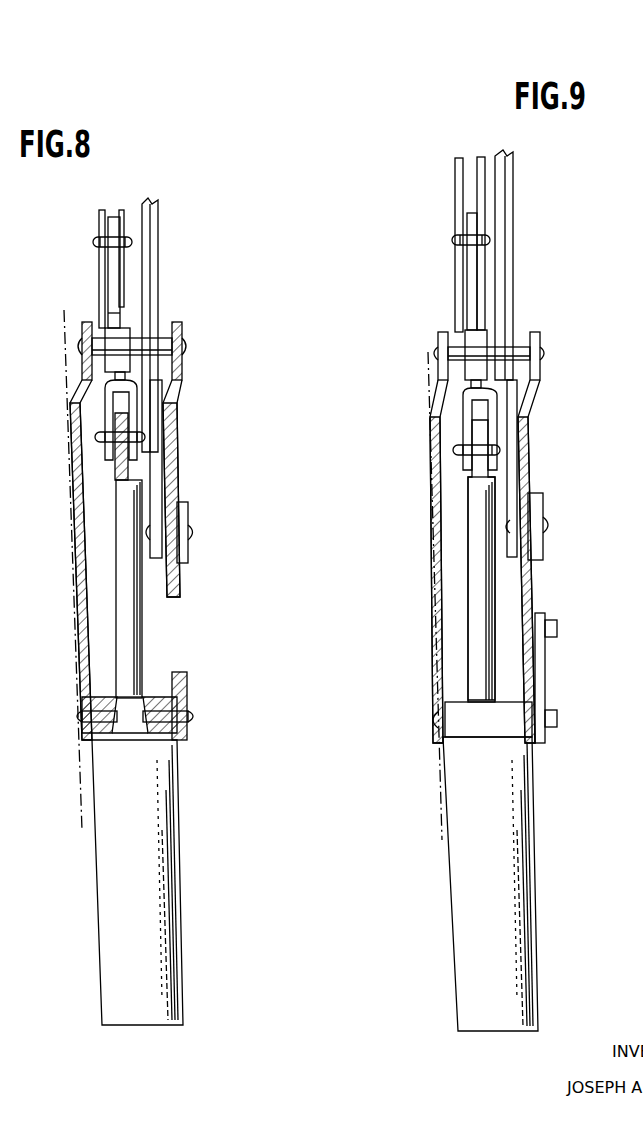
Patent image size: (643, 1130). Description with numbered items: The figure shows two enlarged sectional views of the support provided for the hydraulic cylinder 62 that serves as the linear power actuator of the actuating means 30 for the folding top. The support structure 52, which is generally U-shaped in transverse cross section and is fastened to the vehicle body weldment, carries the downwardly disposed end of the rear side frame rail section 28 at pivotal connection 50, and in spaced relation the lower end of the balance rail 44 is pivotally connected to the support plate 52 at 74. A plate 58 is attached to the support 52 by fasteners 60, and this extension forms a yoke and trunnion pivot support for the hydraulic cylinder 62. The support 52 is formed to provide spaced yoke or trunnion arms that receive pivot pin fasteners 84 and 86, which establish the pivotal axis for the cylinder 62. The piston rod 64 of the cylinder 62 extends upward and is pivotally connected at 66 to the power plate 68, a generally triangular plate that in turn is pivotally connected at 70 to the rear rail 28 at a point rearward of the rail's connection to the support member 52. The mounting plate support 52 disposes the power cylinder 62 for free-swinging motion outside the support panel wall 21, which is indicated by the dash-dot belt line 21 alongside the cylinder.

In FIG. 8, the vehicle belt line 21 is at (72, 795).
In FIG. 9, the vehicle belt line 21 is at (434, 790).
In FIG. 8, the rear side frame rail section 28 is at (124, 224).
In FIG. 9, the rear side frame rail section 28 is at (458, 188).
In FIG. 8, the actuating means 30 is at (186, 806).
In FIG. 9, the actuating means 30 is at (538, 862).
In FIG. 8, the balance rail 44 is at (152, 296).
In FIG. 9, the balance rail 44 is at (512, 297).
In FIG. 8, the pivotal connection 50 is at (189, 346).
In FIG. 9, the pivotal connection 50 is at (548, 350).
In FIG. 8, the support structure 52 is at (171, 458).
In FIG. 9, the support structure 52 is at (528, 463).
In FIG. 8, the plate 58 is at (186, 680).
In FIG. 9, the plate 58 is at (545, 692).
In FIG. 9, the fasteners 60 is at (557, 630).
In FIG. 8, the hydraulic cylinder 62 is at (165, 950).
In FIG. 9, the hydraulic cylinder 62 is at (520, 950).
In FIG. 8, the piston rod 64 is at (131, 637).
In FIG. 9, the piston rod 64 is at (475, 632).
In FIG. 8, the pivotal connection 66 is at (145, 437).
In FIG. 9, the pivotal connection 66 is at (453, 450).
In FIG. 8, the power plate 68 is at (113, 217).
In FIG. 9, the power plate 68 is at (468, 222).
In FIG. 8, the pivotal connection 70 is at (130, 243).
In FIG. 9, the pivotal connection 70 is at (455, 245).
In FIG. 8, the pivotal connection 74 is at (197, 531).
In FIG. 9, the pivotal connection 74 is at (553, 525).
In FIG. 8, the pivot pin fastener 84 is at (72, 716).
In FIG. 9, the pivot pin fastener 84 is at (430, 720).
In FIG. 8, the pivot pin fastener 86 is at (198, 716).
In FIG. 9, the pivot pin fastener 86 is at (557, 718).